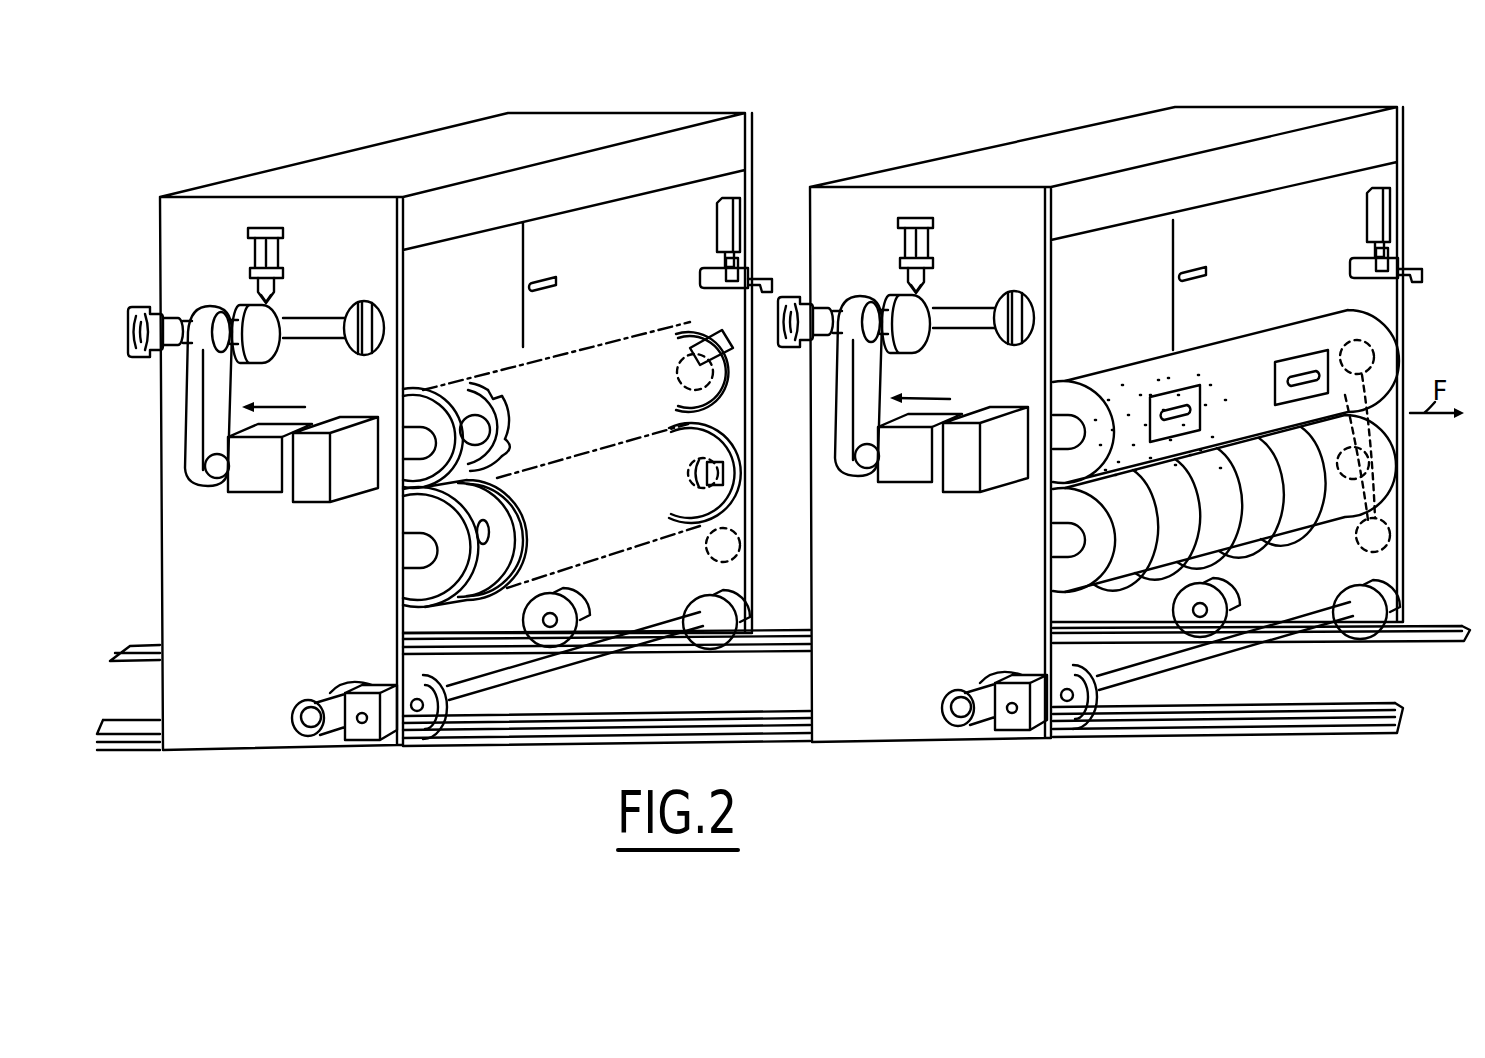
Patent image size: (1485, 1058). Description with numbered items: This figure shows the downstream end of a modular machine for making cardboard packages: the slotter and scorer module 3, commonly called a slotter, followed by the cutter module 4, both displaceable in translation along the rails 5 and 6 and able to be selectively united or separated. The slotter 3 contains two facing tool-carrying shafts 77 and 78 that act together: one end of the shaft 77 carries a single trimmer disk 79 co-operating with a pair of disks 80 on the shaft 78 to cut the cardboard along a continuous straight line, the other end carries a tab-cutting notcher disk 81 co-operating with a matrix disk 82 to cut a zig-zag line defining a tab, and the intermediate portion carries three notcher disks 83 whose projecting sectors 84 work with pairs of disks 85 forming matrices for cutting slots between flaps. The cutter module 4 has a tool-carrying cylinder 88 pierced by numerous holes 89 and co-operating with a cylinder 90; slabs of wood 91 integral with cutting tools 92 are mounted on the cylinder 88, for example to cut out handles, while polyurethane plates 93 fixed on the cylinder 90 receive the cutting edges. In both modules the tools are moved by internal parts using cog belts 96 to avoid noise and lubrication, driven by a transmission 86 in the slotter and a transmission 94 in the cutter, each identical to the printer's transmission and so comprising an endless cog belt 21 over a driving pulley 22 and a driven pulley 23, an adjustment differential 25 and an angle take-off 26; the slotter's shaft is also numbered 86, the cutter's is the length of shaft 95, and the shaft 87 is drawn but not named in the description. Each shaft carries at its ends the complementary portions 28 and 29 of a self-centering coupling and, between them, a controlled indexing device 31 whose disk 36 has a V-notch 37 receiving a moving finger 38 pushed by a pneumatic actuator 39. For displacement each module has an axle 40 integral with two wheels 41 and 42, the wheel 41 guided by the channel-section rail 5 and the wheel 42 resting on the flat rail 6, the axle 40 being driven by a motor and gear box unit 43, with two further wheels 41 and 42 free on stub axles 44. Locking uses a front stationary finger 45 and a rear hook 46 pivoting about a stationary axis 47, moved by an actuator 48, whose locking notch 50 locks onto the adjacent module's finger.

The slotter and scorer module 3 is at (421, 172).
The cutter module 4 is at (1074, 157).
The rail 5 is at (1333, 707).
The rail 6 is at (1420, 624).
The endless cog belt 21 is at (200, 426).
The driving pulley 22 is at (228, 300).
The driven pulley 23 is at (220, 480).
The adjustment differential 25 is at (264, 496).
The angle take-off 26 is at (318, 504).
The complementary portion of coupling device 28 is at (136, 303).
The complementary portion of coupling device 29 is at (353, 354).
The controlled indexing device 31 is at (597, 253).
The disk 36 is at (266, 350).
The V-notch 37 is at (274, 302).
The moving finger 38 is at (269, 288).
The pneumatic actuator 39 is at (256, 248).
The axle 40 is at (584, 665).
The wheel 41 is at (424, 720).
The wheel 42 is at (936, 632).
The motor and gear box unit 43 is at (368, 675).
The stub axles 44 is at (524, 620).
The stationary finger 45 is at (530, 286).
The hook 46 is at (753, 268).
The stationary axis 47 is at (1048, 241).
The actuator 48 is at (717, 213).
The locking notch 50 is at (771, 281).
The tool-carrying shaft 77 is at (425, 428).
The tool-carrying shaft 78 is at (415, 557).
The single trimmer disk 79 is at (511, 401).
The pair of disks 80 is at (480, 560).
The tab-cutting notcher disk 81 is at (683, 343).
The matrix disk 82 is at (706, 450).
The notcher disks 83 is at (506, 445).
The projecting sectors 84 is at (497, 395).
The pairs of disks 85 is at (501, 542).
The transmission 86 is at (292, 409).
The shaft 87 is at (333, 318).
The tool-carrying cylinder 88 is at (1226, 394).
The holes 89 is at (1155, 372).
The cylinder 90 is at (1080, 590).
The slabs of wood 91 is at (1197, 412).
The cutting tools 92 is at (1239, 363).
The polyurethane plates 93 is at (1224, 519).
The transmission 94 is at (937, 401).
The length of shaft 95 is at (985, 308).
The cog belts 96 is at (743, 542).